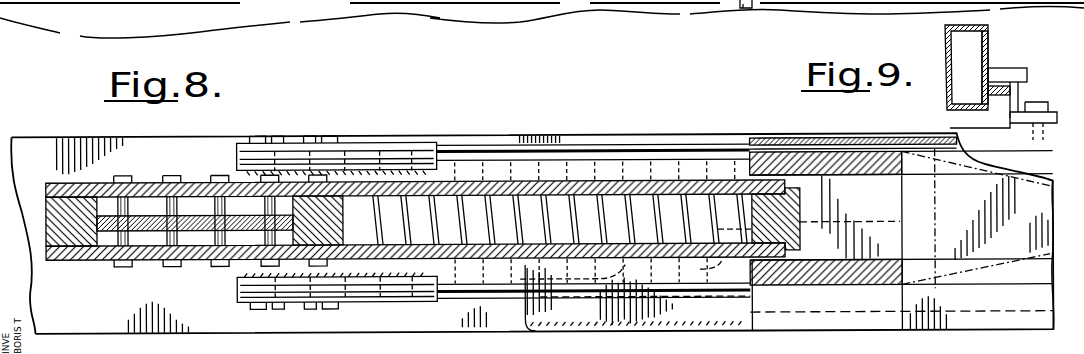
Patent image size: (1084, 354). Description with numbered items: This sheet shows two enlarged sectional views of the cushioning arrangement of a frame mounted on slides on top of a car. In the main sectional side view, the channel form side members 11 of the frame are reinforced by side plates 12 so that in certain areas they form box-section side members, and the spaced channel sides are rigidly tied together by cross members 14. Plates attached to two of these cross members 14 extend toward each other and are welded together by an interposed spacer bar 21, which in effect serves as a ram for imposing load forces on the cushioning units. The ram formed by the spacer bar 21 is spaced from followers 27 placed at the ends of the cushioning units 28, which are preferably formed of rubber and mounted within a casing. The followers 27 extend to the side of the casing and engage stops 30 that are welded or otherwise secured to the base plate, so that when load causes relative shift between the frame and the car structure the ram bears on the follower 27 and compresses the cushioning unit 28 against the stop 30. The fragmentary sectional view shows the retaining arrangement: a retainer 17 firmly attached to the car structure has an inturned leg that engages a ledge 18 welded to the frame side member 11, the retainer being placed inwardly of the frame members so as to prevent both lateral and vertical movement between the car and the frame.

In FIG. 9, the channel form side member 11 is at (989, 33).
In FIG. 9, the side plate 12 is at (946, 42).
In FIG. 8, the cross member 14 is at (343, 222).
In FIG. 9, the retainer 17 is at (1003, 68).
In FIG. 9, the ledge 18 is at (1002, 106).
In FIG. 8, the spacer bar 21 is at (803, 224).
In FIG. 8, the follower 27 is at (902, 233).
In FIG. 8, the cushioning unit 28 is at (1001, 218).
In FIG. 8, the stop 30 is at (607, 296).